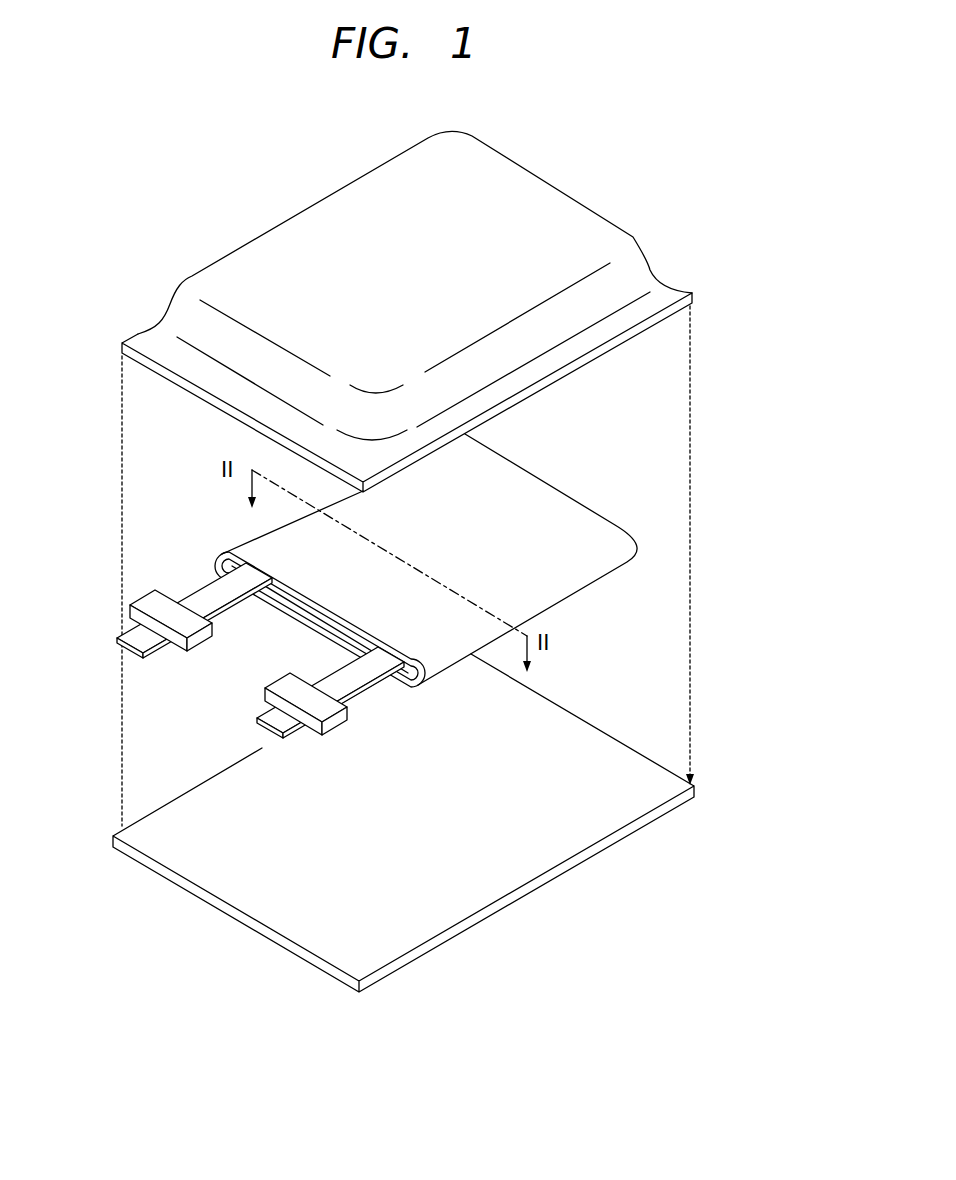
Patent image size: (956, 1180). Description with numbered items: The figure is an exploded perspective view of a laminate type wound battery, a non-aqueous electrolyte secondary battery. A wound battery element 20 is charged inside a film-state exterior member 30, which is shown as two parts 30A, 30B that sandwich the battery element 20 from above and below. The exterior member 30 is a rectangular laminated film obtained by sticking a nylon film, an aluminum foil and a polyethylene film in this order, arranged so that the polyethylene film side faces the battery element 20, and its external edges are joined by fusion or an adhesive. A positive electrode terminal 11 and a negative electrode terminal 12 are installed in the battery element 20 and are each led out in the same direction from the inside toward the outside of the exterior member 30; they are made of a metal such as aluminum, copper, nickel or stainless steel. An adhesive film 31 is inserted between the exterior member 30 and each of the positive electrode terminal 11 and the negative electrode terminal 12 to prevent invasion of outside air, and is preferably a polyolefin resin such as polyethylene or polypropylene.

The exterior member 30 is at (464, 555).
The exterior member part 30A is at (533, 197).
The exterior member part 30B is at (403, 823).
The wound battery element 20 is at (495, 471).
The positive electrode terminal 11 is at (116, 639).
The negative electrode terminal 12 is at (257, 718).
The adhesive film 31 is at (272, 685).